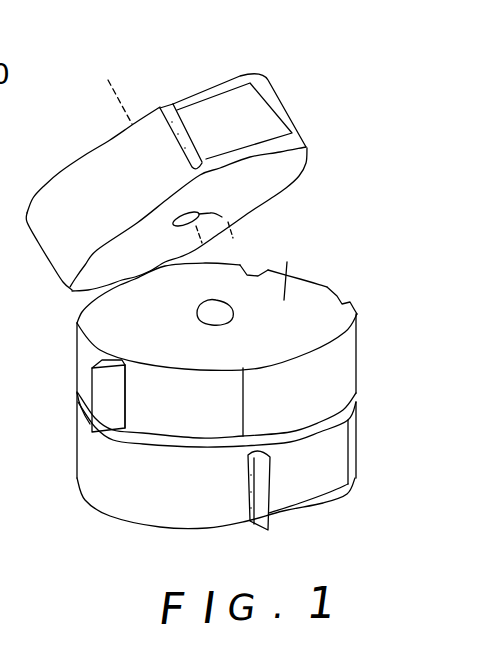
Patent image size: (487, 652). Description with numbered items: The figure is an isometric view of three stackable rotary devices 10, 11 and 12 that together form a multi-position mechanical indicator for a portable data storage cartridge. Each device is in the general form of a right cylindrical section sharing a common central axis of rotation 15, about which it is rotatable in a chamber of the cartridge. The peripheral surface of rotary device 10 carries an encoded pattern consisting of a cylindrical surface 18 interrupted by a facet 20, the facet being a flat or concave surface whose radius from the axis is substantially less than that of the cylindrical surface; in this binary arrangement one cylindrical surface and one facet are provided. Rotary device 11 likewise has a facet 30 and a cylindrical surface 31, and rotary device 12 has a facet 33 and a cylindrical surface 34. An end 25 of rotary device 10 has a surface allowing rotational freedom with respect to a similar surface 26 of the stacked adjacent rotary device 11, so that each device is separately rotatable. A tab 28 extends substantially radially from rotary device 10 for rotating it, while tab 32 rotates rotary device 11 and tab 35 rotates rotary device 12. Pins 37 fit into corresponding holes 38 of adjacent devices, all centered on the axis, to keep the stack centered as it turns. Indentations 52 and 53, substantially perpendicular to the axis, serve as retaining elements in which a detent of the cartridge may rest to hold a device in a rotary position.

The stackable rotary device 10 is at (307, 163).
The stackable rotary device 11 is at (338, 292).
The stackable rotary device 12 is at (357, 437).
The central axis of rotation 15 is at (113, 83).
The cylindrical surface 18 is at (128, 171).
The facet 20 is at (232, 122).
The end of the right cylindrical section 25 is at (245, 187).
The surface 26 is at (287, 262).
The tab 28 is at (168, 100).
The facet 30 is at (183, 400).
The cylindrical surface 31 is at (82, 370).
The tab 32 is at (77, 392).
The facet 33 is at (306, 469).
The cylindrical surface 34 is at (192, 480).
The tab 35 is at (260, 532).
The pin 37 is at (204, 306).
The hole 38 is at (218, 234).
The indentation 52 is at (253, 273).
The indentation 53 is at (350, 303).